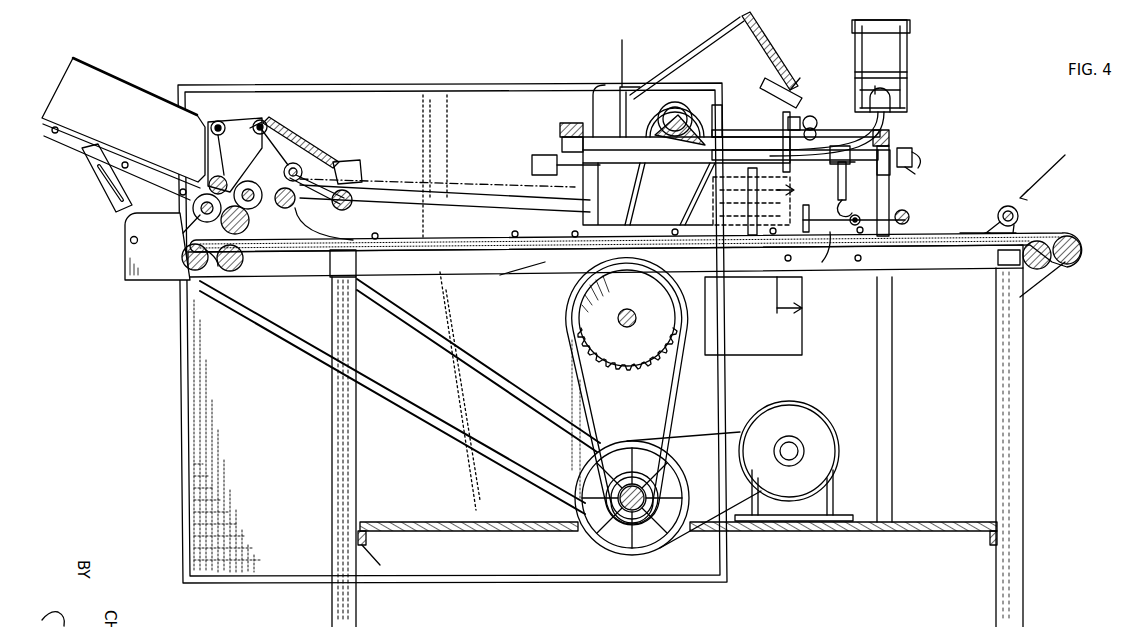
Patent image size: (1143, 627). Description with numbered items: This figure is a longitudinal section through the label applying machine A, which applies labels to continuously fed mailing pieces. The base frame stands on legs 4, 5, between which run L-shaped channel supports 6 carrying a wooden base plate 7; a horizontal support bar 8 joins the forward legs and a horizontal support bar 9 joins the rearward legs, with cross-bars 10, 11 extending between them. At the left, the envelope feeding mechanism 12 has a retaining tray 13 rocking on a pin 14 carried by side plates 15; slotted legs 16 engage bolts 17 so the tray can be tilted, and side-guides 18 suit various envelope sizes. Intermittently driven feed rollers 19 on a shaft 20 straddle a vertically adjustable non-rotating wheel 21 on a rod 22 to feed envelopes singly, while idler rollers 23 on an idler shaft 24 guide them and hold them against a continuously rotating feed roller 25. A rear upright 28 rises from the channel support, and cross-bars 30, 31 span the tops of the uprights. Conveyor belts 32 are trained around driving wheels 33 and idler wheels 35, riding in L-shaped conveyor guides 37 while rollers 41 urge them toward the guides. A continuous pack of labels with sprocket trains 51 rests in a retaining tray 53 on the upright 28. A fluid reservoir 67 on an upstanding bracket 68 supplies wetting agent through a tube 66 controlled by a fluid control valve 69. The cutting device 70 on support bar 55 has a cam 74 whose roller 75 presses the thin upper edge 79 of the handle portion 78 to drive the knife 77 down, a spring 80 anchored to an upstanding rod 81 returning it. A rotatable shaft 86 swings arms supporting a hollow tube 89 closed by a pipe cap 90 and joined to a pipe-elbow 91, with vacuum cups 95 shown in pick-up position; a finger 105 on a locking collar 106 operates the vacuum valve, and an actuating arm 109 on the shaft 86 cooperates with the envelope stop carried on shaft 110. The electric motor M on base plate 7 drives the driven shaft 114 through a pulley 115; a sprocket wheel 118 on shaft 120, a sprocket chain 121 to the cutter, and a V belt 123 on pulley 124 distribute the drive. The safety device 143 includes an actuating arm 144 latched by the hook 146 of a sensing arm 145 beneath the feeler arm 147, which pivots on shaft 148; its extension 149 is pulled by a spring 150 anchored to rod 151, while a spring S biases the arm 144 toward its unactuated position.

The leg 4 is at (332, 596).
The leg 5 is at (1022, 612).
The L-shaped channel support 6 is at (368, 548).
The wooden base plate 7 is at (925, 522).
The horizontal support bar 8 is at (522, 575).
The horizontal support bar 9 is at (948, 258).
The cross-bar 10 is at (330, 278).
The cross-bar 11 is at (1042, 289).
The envelope feeding mechanism 12 is at (218, 118).
The retaining tray or shelf 13 is at (78, 85).
The pin 14 is at (192, 214).
The side plates 15 is at (150, 272).
The legs 16 is at (95, 170).
The bolts 17 is at (129, 240).
The side-guides 18 is at (112, 88).
The feed rollers 19 is at (226, 170).
The shaft 20 is at (268, 135).
The non-rotating wheel 21 is at (262, 175).
The nonrotating rod 22 is at (222, 228).
The idler rollers 23 is at (286, 212).
The idler shaft 24 is at (300, 170).
The feed roller 25 is at (200, 272).
The upright 28 is at (585, 380).
The cross-bar 30 is at (593, 92).
The cross-bar 31 is at (892, 150).
The conveyor belts 32 is at (1040, 233).
The driving wheels 33 is at (228, 272).
The idler wheels 35 is at (1078, 240).
The L-shaped conveyor guides 37 is at (955, 231).
The rollers 41 is at (455, 230).
The sprocket trains 51 is at (780, 248).
The retaining tray or shelf 53 is at (765, 345).
The lengthwise extending support bar 55 is at (630, 128).
The tube 66 is at (872, 130).
The fluid reservoir 67 is at (907, 24).
The upstanding bracket 68 is at (890, 133).
The fluid control valve 69 is at (890, 105).
The cutting device 70 is at (805, 72).
The eccentric or cam 74 is at (680, 105).
The roller 75 is at (668, 104).
The knife 77 is at (800, 95).
The handle portion 78 is at (778, 80).
The thin upper edge 79 is at (672, 138).
The spring 80 is at (745, 52).
The upstanding rod 81 is at (614, 53).
The rotatable shaft 86 is at (917, 157).
The hollow tube 89 is at (745, 178).
The pipe cap 90 is at (722, 108).
The pipe-elbow 91 is at (800, 125).
The vacuum cups 95 is at (760, 232).
The finger 105 is at (900, 150).
The locking collar 106 is at (910, 172).
The actuating arm 109 is at (846, 185).
The shaft 110 is at (910, 216).
The driven shaft 114 is at (638, 513).
The pulley 115 is at (615, 552).
The sprocket wheel 118 is at (575, 318).
The shaft 120 is at (618, 322).
The sprocket chain 121 is at (684, 198).
The V belt 123 is at (484, 447).
The pulley 124 is at (600, 503).
The safety device 143 is at (492, 192).
The actuating arm 144 is at (586, 185).
The sensing arm 145 is at (448, 190).
The hook 146 is at (575, 183).
The feeler arm 147 is at (270, 230).
The shaft 148 is at (272, 145).
The upwardly projecting extension 149 is at (300, 160).
The spring 150 is at (268, 140).
The rod 151 is at (260, 118).
The label applying machine A is at (1053, 169).
The electric motor M is at (818, 412).
The spring S is at (555, 252).